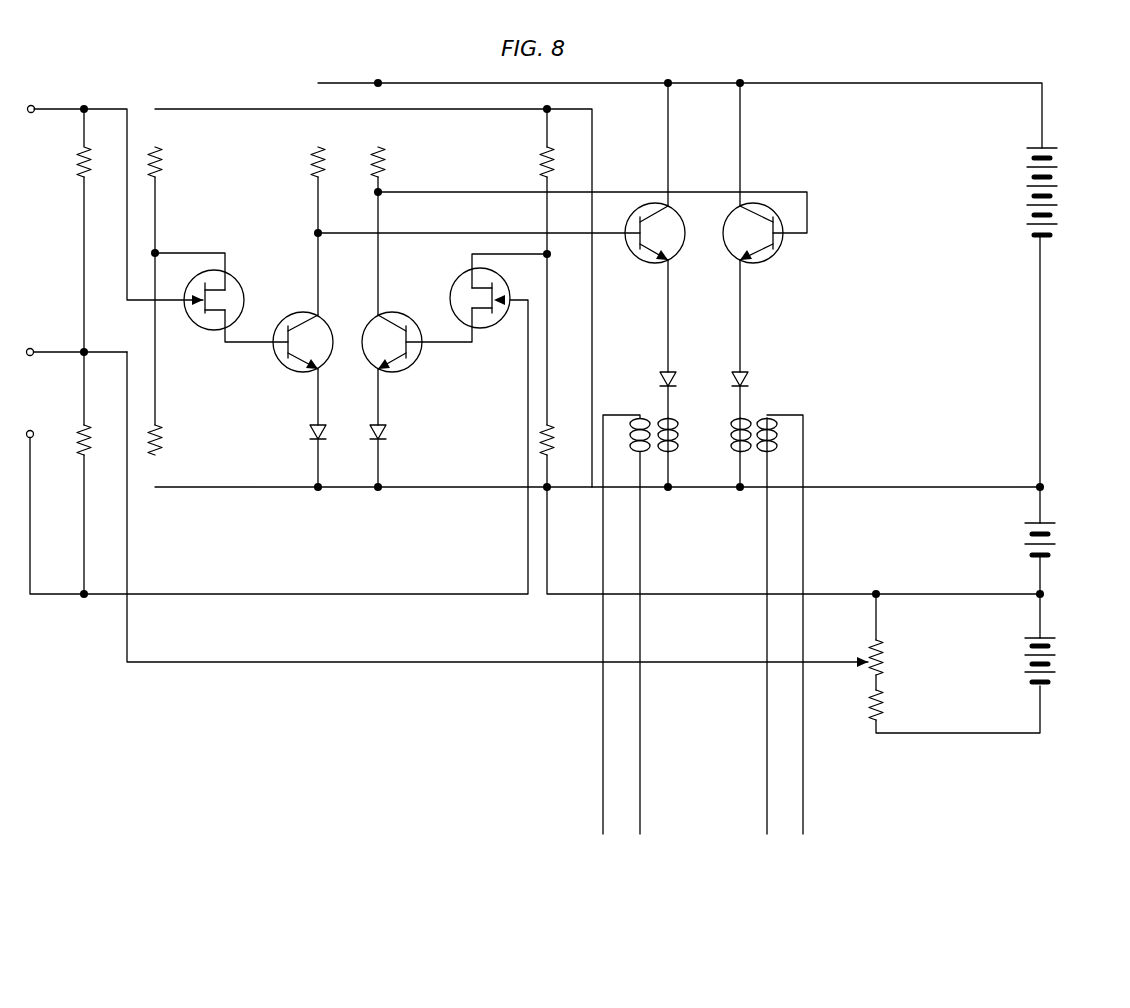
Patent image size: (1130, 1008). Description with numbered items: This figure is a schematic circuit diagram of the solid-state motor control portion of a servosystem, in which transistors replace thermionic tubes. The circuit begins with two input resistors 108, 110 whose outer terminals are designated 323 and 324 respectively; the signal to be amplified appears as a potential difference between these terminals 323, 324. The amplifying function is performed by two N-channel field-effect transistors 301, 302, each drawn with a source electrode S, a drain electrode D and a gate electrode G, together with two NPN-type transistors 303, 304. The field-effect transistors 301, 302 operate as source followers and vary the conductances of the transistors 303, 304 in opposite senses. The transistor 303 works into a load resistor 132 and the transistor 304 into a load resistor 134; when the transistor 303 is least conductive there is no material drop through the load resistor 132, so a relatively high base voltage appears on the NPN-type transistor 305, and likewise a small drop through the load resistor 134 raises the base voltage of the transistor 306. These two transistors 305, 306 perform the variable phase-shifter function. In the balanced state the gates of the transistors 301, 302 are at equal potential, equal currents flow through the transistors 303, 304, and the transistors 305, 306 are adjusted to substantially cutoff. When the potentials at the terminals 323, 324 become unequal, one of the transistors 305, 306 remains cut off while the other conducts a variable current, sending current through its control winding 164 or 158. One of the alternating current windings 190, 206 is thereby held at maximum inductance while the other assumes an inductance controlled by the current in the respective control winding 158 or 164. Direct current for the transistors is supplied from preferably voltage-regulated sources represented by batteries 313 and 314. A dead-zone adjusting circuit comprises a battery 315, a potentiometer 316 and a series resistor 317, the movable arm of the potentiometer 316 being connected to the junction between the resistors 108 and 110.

The outer terminal 323 is at (34, 105).
The outer terminal 324 is at (31, 429).
The resistor 108 is at (78, 162).
The resistor 110 is at (93, 445).
The load resistor 132 is at (311, 160).
The load resistor 134 is at (395, 163).
The N-channel field-effect transistor 301 is at (206, 321).
The N-channel field-effect transistor 302 is at (459, 284).
The NPN-type transistor 303 is at (321, 326).
The NPN-type transistor 304 is at (398, 372).
The NPN-type transistor 305 is at (630, 248).
The NPN-type transistor 306 is at (763, 258).
The alternating current winding 206 is at (638, 412).
The control winding 164 is at (680, 430).
The control winding 158 is at (738, 445).
The alternating current winding 190 is at (778, 437).
The battery 313 is at (1052, 212).
The battery 314 is at (1052, 535).
The battery 315 is at (1053, 662).
The potentiometer 316 is at (886, 662).
The series resistor 317 is at (885, 712).